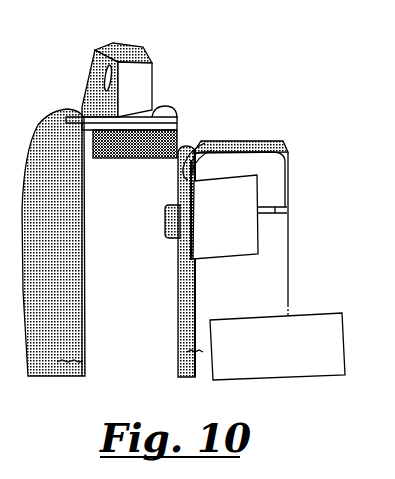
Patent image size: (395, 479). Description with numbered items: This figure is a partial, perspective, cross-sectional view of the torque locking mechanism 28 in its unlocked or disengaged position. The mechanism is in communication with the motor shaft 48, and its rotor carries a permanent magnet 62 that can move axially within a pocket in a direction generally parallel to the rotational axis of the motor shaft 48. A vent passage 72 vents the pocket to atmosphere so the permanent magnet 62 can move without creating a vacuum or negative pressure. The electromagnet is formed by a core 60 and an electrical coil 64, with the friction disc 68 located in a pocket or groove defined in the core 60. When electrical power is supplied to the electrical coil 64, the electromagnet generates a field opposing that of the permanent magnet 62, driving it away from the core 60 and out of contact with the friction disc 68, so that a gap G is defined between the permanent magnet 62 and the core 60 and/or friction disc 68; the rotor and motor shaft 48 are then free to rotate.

The torque locking mechanism 28 is at (203, 76).
The core 60 is at (139, 82).
The electrical coil 64 is at (172, 146).
The friction disc 68 is at (166, 224).
The permanent magnet 62 is at (228, 188).
The vent passage 72 is at (274, 212).
The gap G is at (182, 165).
The motor shaft 48 is at (286, 355).